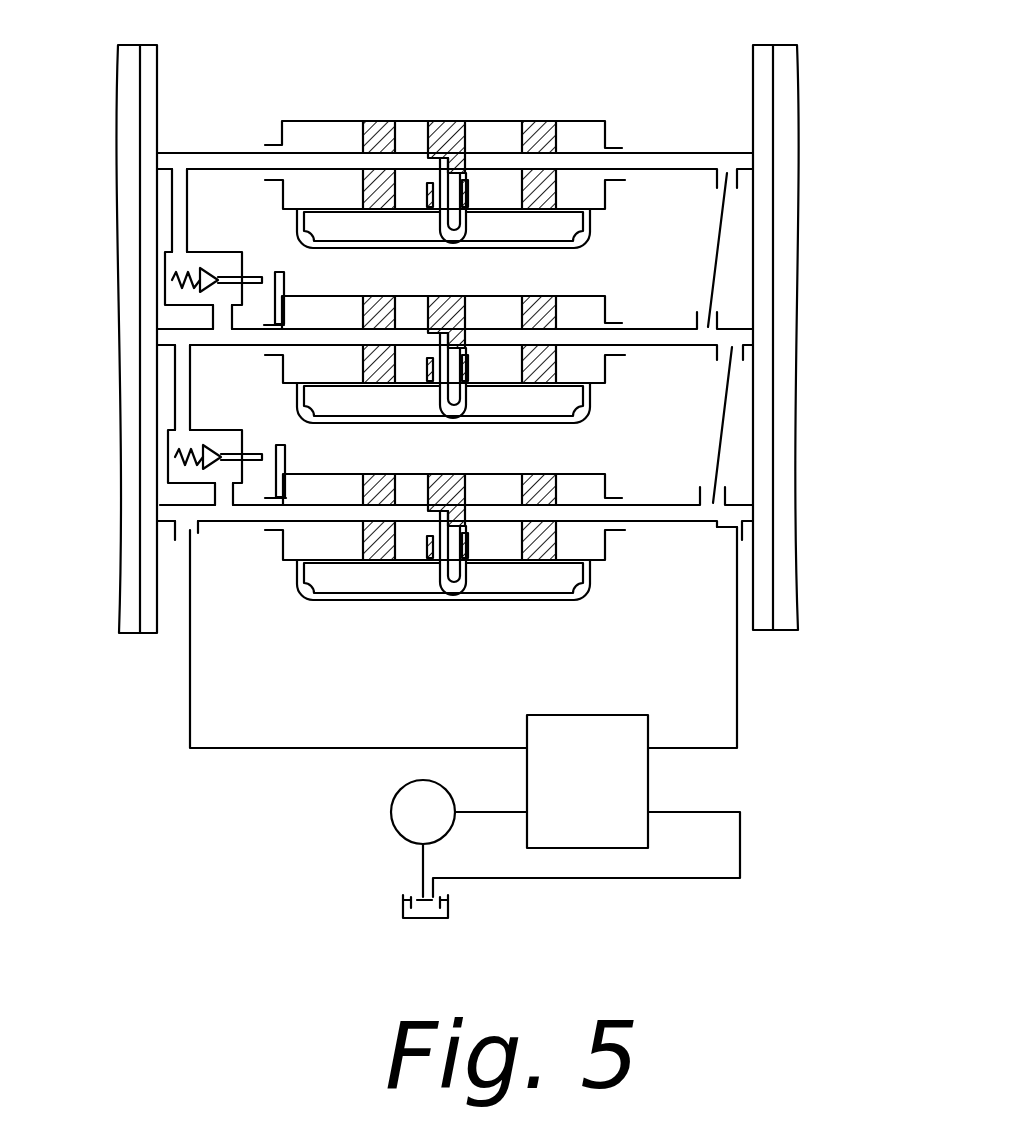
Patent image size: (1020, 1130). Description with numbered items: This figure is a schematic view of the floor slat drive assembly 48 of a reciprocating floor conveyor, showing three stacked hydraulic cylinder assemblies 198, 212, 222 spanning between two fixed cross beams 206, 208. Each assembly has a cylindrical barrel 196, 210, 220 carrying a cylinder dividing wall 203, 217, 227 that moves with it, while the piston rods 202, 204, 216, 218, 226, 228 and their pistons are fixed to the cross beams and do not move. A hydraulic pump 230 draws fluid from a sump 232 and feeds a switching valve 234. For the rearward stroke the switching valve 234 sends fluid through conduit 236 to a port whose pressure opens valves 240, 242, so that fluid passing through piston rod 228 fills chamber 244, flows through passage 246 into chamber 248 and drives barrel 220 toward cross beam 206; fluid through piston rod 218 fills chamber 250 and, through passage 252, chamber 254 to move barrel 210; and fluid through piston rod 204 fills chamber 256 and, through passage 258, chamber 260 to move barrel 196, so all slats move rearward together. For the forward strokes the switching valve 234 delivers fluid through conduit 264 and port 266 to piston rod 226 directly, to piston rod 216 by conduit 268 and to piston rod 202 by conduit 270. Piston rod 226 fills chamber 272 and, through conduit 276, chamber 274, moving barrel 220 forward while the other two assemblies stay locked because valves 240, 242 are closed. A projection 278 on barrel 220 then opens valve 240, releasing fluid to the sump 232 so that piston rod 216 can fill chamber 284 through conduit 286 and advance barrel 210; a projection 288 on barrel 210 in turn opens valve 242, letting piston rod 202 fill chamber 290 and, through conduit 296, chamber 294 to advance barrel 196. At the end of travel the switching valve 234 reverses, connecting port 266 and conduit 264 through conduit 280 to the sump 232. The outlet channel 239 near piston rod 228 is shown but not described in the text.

The floor slat drive assembly 48 is at (648, 102).
The cylindrical barrel 196 is at (487, 125).
The hydraulic cylinder assembly 198 is at (455, 142).
The piston rod 202 is at (690, 154).
The cylinder dividing wall 203 is at (445, 128).
The piston rod 204 is at (235, 152).
The cross beam 206 is at (790, 82).
The cross beam 208 is at (130, 62).
The cylindrical barrel 210 is at (527, 316).
The hydraulic cylinder assembly 212 is at (248, 357).
The piston rod 216 is at (678, 336).
The cylinder dividing wall 217 is at (467, 360).
The piston rod 218 is at (183, 332).
The cylindrical barrel 220 is at (590, 462).
The hydraulic cylinder assembly 222 is at (276, 538).
The piston rod 226 is at (681, 518).
The cylinder dividing wall 227 is at (448, 490).
The piston rod 228 is at (190, 530).
The hydraulic pump 230 is at (405, 822).
The sump 232 is at (415, 905).
The switching valve 234 is at (543, 734).
The conduit 236 is at (244, 752).
The outlet channel 239 is at (180, 538).
The valve 240 is at (202, 419).
The valve 242 is at (214, 243).
The chamber 244 is at (414, 566).
The passage 246 is at (586, 596).
The chamber 248 is at (606, 474).
The chamber 250 is at (407, 313).
The passage 252 is at (513, 408).
The chamber 254 is at (592, 368).
The chamber 256 is at (406, 128).
The passage 258 is at (594, 230).
The chamber 260 is at (582, 138).
The conduit 264 is at (738, 712).
The port 266 is at (730, 533).
The conduit 268 is at (725, 425).
The conduit 270 is at (725, 228).
The chamber 272 is at (505, 560).
The chamber 274 is at (376, 496).
The conduit 276 is at (330, 600).
The projection 278 is at (288, 454).
The conduit 280 is at (684, 880).
The chamber 284 is at (306, 314).
The conduit 286 is at (303, 408).
The projection 288 is at (278, 271).
The chamber 290 is at (500, 136).
The chamber 294 is at (325, 130).
The conduit 296 is at (331, 242).